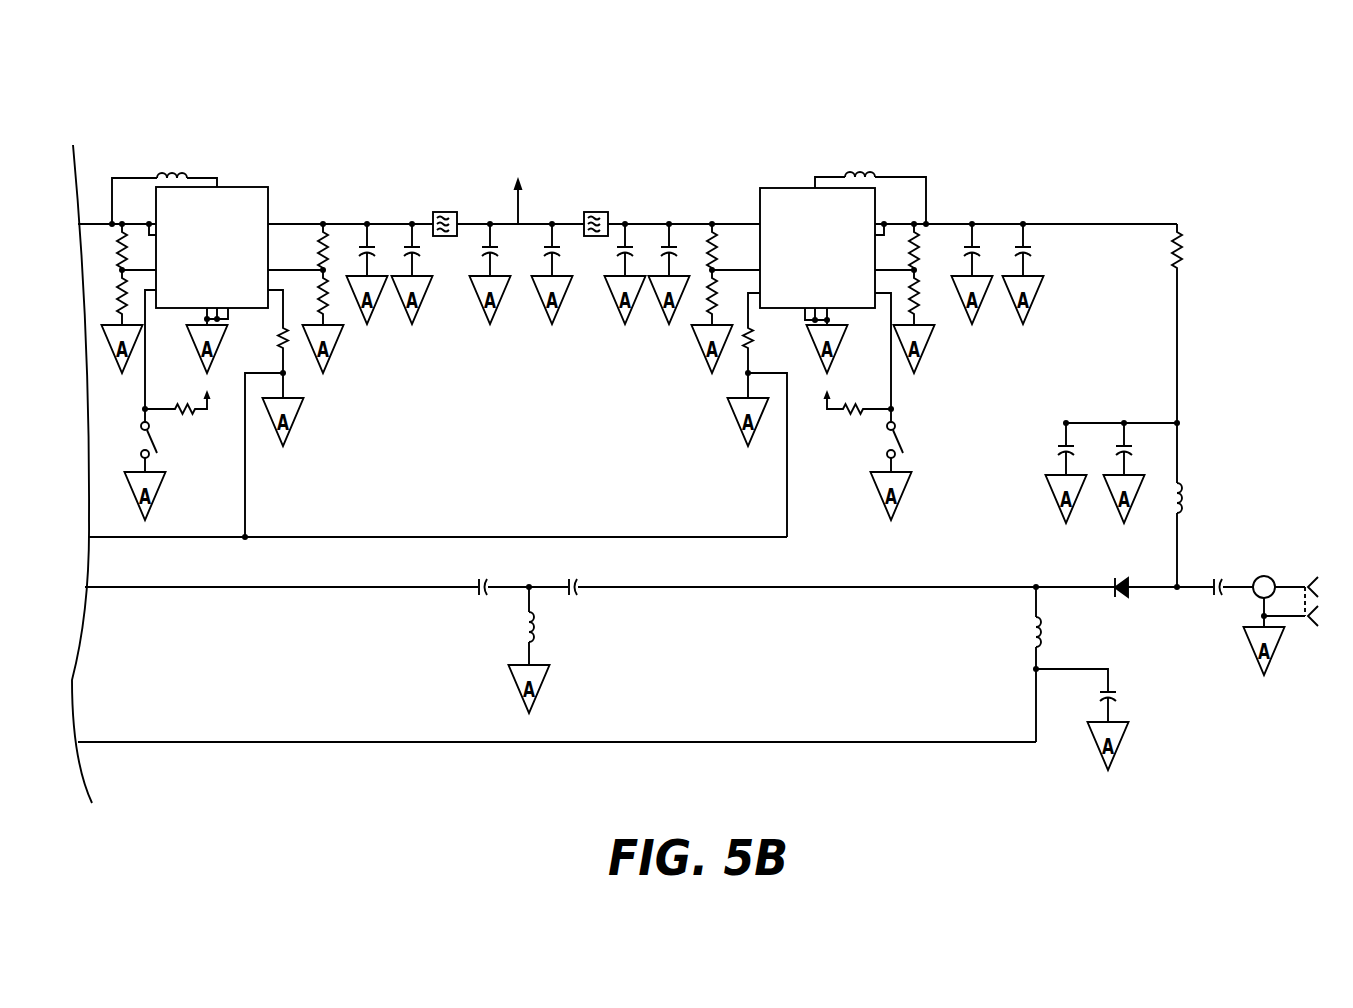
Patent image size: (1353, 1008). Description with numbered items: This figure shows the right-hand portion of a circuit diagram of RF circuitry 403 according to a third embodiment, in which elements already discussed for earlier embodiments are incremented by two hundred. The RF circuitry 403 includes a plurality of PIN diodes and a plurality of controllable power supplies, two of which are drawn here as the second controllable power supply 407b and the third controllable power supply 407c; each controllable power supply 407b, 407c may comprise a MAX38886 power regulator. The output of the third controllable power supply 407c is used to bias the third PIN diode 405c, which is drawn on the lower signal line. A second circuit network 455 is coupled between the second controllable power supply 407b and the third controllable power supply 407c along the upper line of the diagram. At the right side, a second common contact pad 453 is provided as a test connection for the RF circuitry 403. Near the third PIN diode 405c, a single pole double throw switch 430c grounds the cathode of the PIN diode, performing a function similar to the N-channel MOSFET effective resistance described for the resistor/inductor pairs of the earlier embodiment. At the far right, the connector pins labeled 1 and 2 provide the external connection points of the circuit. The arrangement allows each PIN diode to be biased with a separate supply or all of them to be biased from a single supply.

The RF circuitry 403 is at (702, 424).
The second controllable power supply 407b is at (233, 198).
The third controllable power supply 407c is at (798, 195).
The second circuit network 455 is at (585, 155).
The second common contact pad 453 is at (1216, 216).
The single pole double throw switch 430c is at (1028, 663).
The third PIN diode 405c is at (1130, 606).
The connector pin 1 is at (1319, 588).
The connector pin 2 is at (1320, 617).